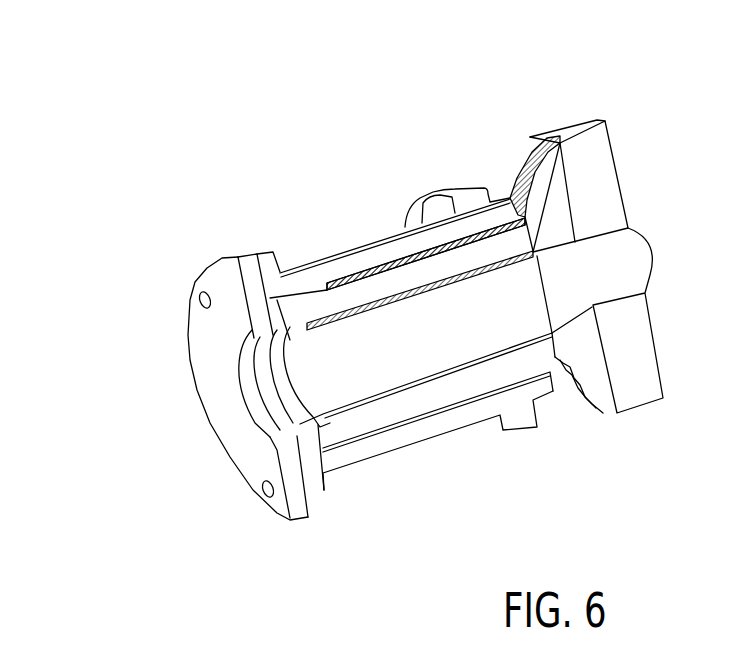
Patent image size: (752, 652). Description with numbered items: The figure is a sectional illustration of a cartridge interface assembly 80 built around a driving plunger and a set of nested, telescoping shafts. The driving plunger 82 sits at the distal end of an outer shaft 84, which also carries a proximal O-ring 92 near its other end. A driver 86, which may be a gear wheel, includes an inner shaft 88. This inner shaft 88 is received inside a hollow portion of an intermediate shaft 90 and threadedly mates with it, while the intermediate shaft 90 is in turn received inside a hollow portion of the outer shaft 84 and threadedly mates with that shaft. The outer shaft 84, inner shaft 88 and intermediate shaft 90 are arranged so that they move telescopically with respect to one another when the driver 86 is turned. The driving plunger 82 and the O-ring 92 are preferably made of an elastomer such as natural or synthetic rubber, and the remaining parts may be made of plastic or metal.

The cartridge interface assembly 80 is at (367, 269).
The driving plunger 82 is at (215, 282).
The outer shaft 84 is at (333, 265).
The driver 86 is at (595, 143).
The inner shaft 88 is at (538, 303).
The intermediate shaft 90 is at (387, 282).
The proximal O-ring 92 is at (457, 188).